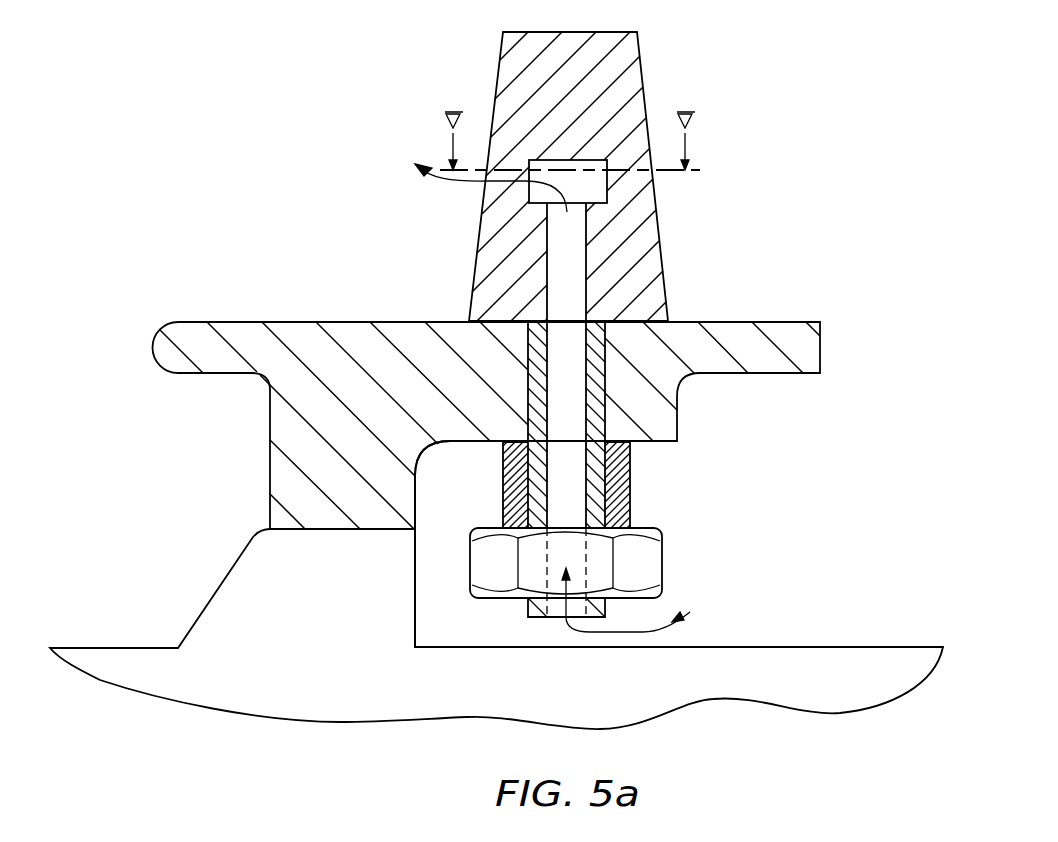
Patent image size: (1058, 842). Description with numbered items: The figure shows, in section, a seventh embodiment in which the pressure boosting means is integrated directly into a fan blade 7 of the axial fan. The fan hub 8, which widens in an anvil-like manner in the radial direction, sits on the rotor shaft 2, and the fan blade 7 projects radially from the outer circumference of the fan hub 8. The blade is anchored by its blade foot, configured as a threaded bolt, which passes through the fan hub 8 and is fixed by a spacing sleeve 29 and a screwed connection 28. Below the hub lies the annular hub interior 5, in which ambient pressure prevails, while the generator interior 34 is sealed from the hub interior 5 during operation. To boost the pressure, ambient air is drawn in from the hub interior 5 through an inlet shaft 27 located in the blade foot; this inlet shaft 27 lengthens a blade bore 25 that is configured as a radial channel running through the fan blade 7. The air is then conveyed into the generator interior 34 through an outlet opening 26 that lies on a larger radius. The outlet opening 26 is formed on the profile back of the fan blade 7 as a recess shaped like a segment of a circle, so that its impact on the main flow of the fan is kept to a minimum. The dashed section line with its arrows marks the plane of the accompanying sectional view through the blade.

The rotor shaft 2 is at (312, 632).
The hub interior 5 is at (750, 614).
The fan blade 7 is at (628, 72).
The fan hub 8 is at (309, 334).
The blade bore 25 is at (580, 262).
The outlet opening 26 is at (590, 187).
The inlet shaft 27 is at (575, 500).
The screwed connection 28 is at (648, 562).
The spacing sleeve 29 is at (632, 466).
The generator interior 34 is at (333, 178).